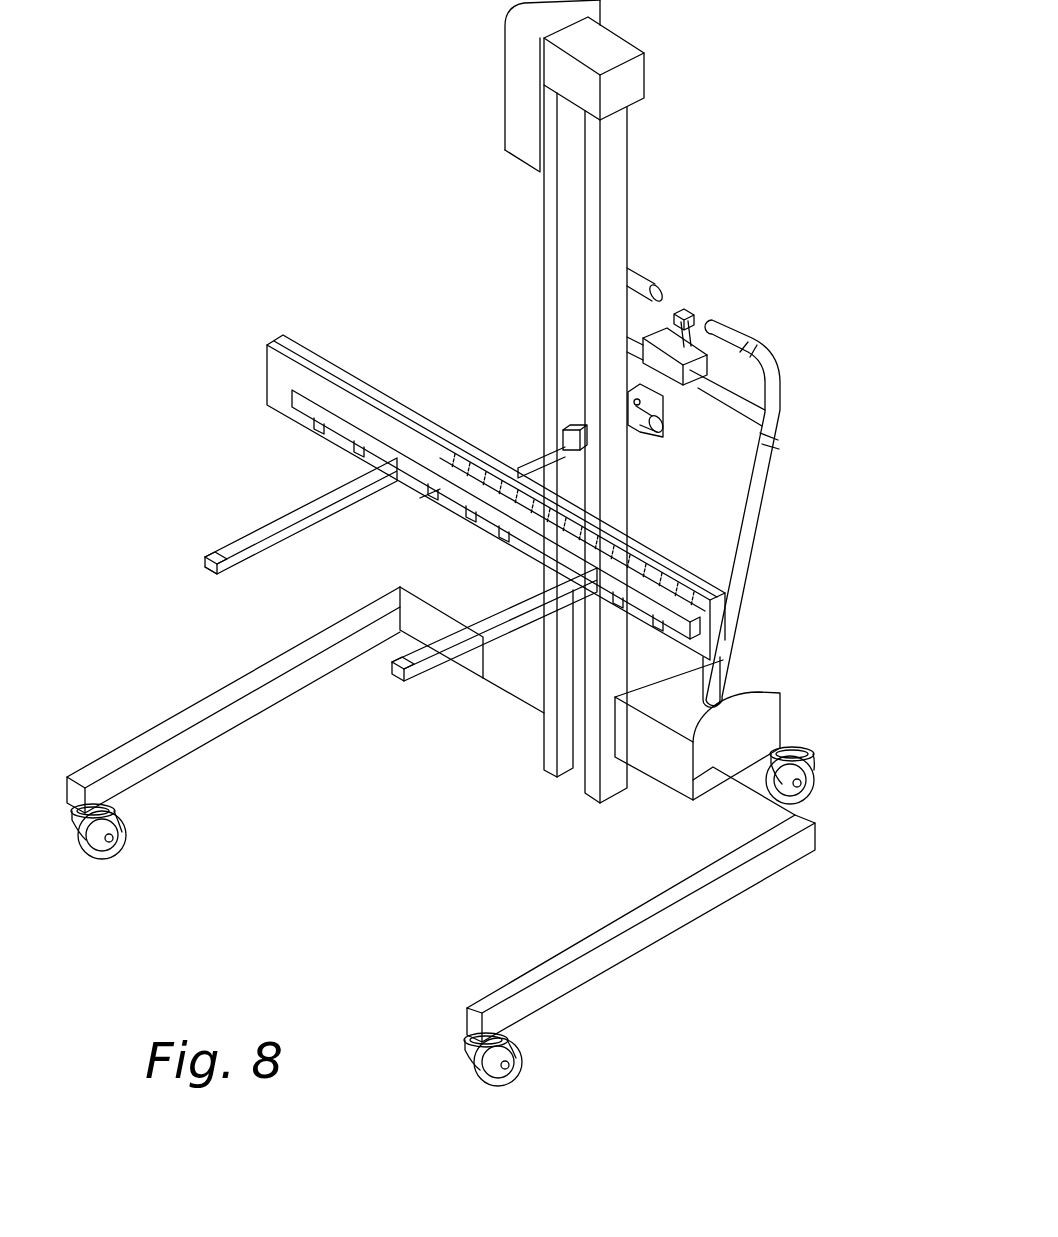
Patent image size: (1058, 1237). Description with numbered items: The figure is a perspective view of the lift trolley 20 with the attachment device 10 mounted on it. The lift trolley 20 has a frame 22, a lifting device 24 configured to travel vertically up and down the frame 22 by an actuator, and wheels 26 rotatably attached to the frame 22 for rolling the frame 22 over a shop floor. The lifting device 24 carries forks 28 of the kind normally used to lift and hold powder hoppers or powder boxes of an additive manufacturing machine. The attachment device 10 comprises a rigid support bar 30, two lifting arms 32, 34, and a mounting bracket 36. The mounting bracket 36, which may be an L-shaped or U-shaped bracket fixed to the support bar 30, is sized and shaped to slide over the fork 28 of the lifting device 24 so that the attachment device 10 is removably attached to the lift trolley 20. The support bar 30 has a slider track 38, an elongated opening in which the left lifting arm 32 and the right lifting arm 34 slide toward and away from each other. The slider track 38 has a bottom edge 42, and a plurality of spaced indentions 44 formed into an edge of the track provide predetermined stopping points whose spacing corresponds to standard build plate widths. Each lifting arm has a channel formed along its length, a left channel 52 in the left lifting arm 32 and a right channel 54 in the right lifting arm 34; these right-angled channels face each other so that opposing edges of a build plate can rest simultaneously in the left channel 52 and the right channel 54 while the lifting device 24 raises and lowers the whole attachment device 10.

The attachment device 10 is at (165, 402).
The lift trolley 20 is at (702, 124).
The frame 22 is at (614, 228).
The lifting device 24 is at (528, 456).
The wheels 26 is at (86, 845).
The forks 28 is at (445, 432).
The support bar 30 is at (270, 378).
The left lifting arm 32 is at (460, 661).
The right lifting arm 34 is at (281, 536).
The mounting bracket 36 is at (330, 360).
The slider track 38 is at (428, 503).
The bottom edge 42 is at (640, 618).
The indentions 44 is at (455, 515).
The left channel 52 is at (395, 660).
The right channel 54 is at (278, 538).